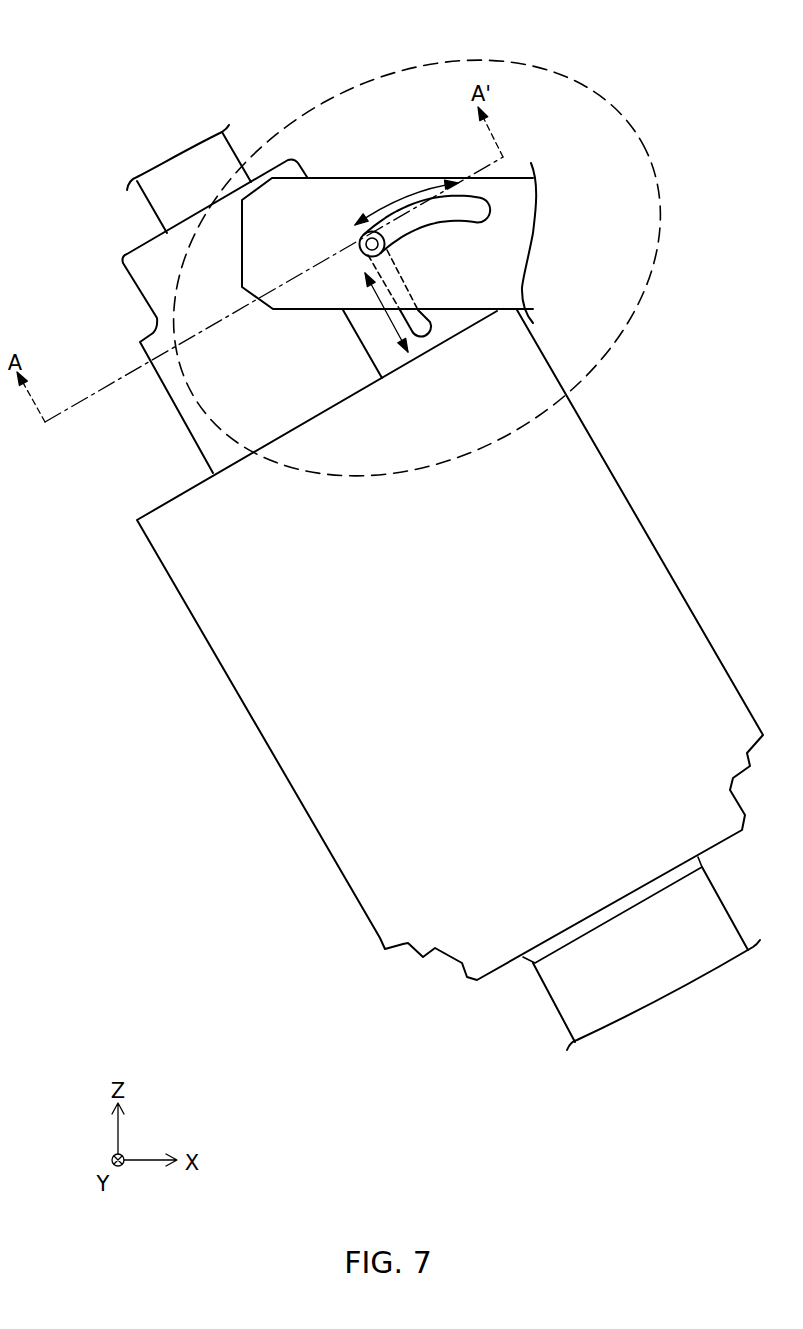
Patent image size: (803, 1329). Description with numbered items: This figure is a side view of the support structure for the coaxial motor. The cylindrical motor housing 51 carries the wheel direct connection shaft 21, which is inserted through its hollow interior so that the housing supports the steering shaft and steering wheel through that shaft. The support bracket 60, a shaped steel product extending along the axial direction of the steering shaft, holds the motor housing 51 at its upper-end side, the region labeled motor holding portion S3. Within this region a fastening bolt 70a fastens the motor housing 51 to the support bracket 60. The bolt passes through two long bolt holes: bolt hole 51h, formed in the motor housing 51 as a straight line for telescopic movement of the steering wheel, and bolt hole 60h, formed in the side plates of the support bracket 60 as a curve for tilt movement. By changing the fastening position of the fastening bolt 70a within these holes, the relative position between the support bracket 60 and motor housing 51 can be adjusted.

The wheel direct connection shaft 21 is at (172, 207).
The motor housing 51 is at (203, 455).
The bolt hole 51h is at (437, 332).
The support bracket 60 is at (502, 248).
The bolt hole 60h is at (487, 210).
The fastening bolt 70a is at (372, 231).
The motor holding portion S3 is at (590, 82).